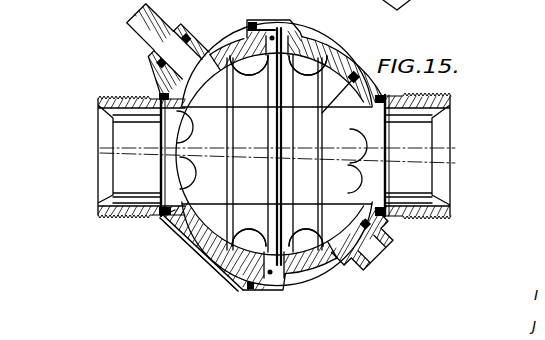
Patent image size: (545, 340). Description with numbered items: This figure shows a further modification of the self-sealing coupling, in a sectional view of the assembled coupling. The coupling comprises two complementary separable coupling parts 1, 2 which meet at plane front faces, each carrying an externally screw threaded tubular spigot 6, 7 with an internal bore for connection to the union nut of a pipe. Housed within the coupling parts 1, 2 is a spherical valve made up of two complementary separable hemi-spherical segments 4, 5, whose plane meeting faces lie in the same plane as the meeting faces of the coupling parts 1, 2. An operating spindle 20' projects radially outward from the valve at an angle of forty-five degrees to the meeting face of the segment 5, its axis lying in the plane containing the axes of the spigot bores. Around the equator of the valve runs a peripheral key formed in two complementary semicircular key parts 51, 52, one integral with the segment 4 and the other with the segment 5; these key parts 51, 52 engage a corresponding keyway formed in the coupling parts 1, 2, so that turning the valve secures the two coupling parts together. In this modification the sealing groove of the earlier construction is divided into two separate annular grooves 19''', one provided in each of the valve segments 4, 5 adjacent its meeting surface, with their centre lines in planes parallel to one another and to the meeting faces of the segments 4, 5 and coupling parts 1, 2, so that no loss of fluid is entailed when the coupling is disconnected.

The coupling part 1 is at (358, 56).
The coupling part 2 is at (197, 257).
The hemi-spherical segment 4 is at (442, 117).
The hemi-spherical segment 5 is at (172, 213).
The tubular spigot 6 is at (388, 95).
The tubular spigot 7 is at (124, 91).
The key part 51 is at (373, 83).
The key part 52 is at (210, 202).
The annular groove 19''' is at (291, 150).
The stem 20' is at (376, 5).